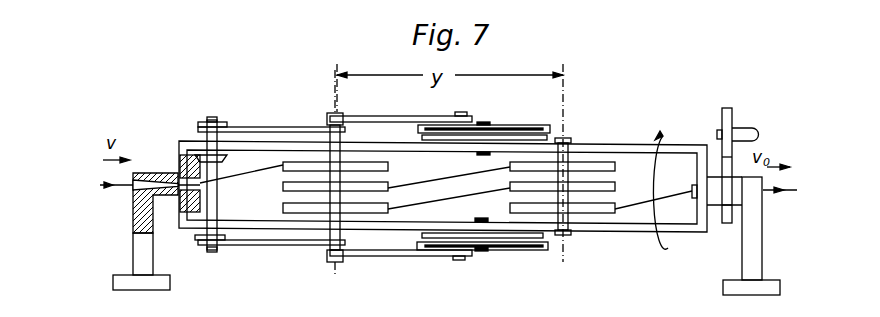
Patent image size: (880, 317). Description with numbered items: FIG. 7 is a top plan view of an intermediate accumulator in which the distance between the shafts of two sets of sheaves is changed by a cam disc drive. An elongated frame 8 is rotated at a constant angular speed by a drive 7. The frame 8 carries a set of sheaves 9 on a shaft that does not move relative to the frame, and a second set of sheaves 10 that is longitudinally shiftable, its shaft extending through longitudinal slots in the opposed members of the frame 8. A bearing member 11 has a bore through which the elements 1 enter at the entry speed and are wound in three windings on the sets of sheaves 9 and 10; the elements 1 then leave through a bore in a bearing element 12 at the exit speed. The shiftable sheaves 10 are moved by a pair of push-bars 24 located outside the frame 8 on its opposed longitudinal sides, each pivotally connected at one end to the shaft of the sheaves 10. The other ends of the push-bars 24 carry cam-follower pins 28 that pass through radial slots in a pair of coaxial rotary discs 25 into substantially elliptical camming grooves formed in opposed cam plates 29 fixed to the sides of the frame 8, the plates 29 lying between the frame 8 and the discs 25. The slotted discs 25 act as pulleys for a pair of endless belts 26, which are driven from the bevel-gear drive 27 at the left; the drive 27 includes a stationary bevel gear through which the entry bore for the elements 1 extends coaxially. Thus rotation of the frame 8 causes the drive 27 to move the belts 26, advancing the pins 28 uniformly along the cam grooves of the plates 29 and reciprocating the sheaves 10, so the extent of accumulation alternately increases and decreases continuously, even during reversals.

The elements 1 is at (118, 189).
The drive 7 is at (730, 120).
The elongated frame 8 is at (605, 232).
The set of sheaves 9 is at (593, 166).
The second set of sheaves 10 is at (305, 208).
The bearing member 11 is at (153, 172).
The bearing element 12 is at (738, 192).
The push-bars 24 is at (382, 117).
The rotary discs 25 is at (515, 125).
The endless belts 26 is at (260, 127).
The bevel-gear drive 27 is at (200, 158).
The cam-follower pins 28 is at (460, 112).
The cam plates 29 is at (553, 140).